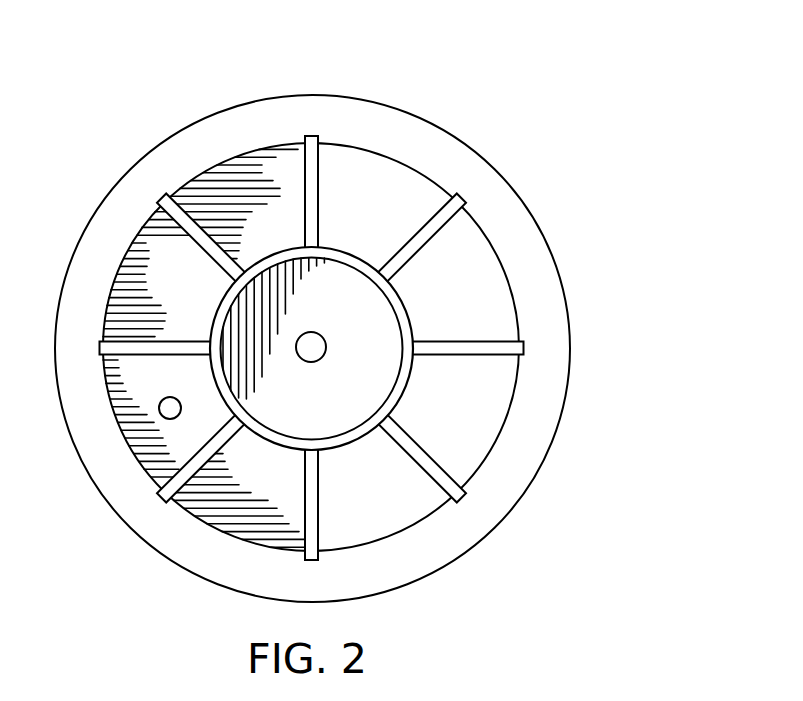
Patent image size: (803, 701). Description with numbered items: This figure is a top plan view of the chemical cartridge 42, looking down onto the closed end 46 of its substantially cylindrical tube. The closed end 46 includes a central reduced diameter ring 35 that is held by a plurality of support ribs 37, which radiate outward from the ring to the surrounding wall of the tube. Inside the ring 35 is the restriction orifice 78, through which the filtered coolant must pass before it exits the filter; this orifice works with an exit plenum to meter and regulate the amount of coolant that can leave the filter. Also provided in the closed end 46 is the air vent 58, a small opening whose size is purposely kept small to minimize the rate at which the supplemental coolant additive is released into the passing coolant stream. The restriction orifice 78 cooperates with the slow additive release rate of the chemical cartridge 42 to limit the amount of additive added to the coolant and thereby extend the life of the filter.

The chemical cartridge 42 is at (438, 81).
The closed end 46 is at (422, 208).
The support ribs 37 is at (310, 210).
The reduced diameter ring 35 is at (405, 318).
The restriction orifice 78 is at (324, 343).
The air vent 58 is at (173, 407).